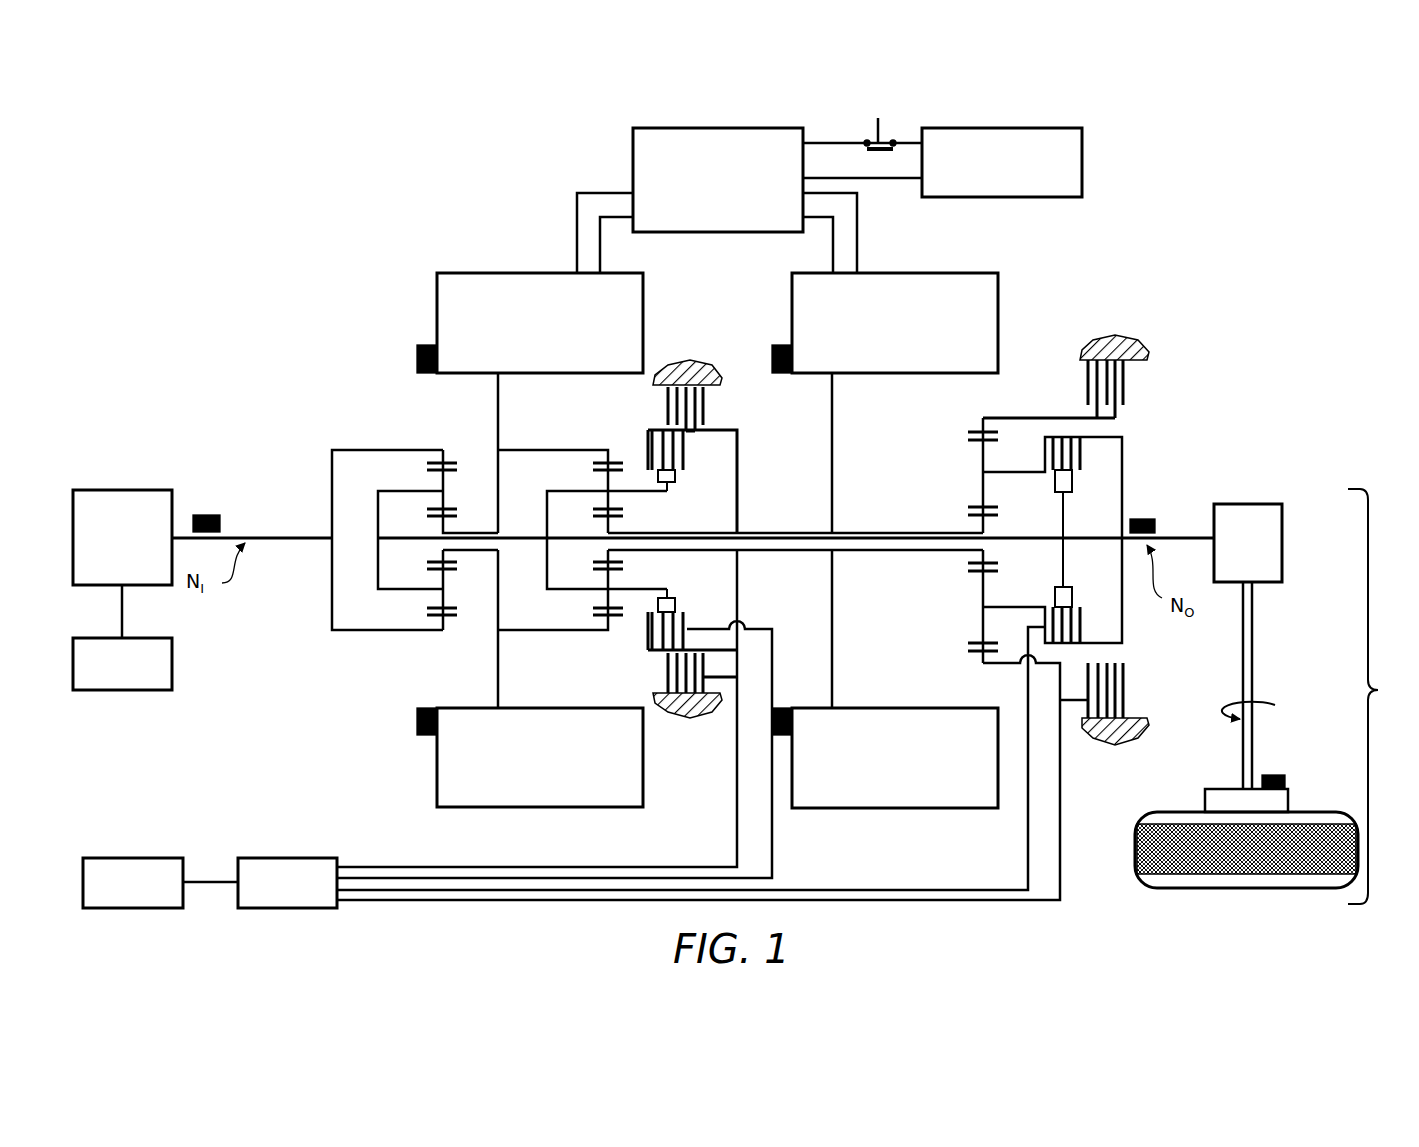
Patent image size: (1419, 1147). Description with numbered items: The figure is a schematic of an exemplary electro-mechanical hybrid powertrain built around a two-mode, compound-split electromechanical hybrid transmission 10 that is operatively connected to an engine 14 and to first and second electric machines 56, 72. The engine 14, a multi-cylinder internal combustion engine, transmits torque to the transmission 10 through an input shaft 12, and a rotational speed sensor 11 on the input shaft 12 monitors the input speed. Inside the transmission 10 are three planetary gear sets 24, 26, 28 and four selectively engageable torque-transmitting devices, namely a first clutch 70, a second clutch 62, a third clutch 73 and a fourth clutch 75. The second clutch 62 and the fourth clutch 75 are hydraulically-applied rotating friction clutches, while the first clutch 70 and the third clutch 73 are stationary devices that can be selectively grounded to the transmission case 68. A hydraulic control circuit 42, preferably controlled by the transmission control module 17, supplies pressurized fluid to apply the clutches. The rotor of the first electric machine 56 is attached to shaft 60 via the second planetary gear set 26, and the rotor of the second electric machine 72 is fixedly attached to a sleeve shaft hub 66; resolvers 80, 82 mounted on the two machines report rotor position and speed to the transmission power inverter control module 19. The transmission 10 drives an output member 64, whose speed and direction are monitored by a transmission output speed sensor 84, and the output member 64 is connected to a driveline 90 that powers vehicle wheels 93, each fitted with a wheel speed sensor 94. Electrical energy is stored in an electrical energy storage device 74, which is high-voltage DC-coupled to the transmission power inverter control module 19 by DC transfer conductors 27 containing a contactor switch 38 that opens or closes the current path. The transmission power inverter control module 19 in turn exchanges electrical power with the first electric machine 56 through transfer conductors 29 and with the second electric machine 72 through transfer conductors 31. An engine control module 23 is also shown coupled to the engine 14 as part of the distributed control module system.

The electromechanical hybrid transmission 10 is at (398, 235).
The rotational speed sensor 11 is at (205, 515).
The input shaft 12 is at (290, 536).
The engine 14 is at (128, 490).
The transmission control module 17 is at (122, 858).
The transmission power inverter control module 19 is at (633, 142).
The engine control module 23 is at (172, 681).
The first planetary gear set 24 is at (433, 445).
The second planetary gear set 26 is at (605, 445).
The DC transfer conductors 27 is at (818, 143).
The third planetary gear set 28 is at (975, 415).
The transfer conductors 29 is at (577, 230).
The transfer conductors 31 is at (857, 226).
The contactor switch 38 is at (880, 126).
The hydraulic control circuit 42 is at (255, 858).
The first electric machine 56 is at (437, 306).
The shaft 60 is at (1037, 537).
The clutch C2 62 is at (1078, 480).
The output member 64 is at (1178, 536).
The sleeve shaft hub 66 is at (870, 533).
The transmission case 68 is at (690, 372).
The clutch C1 70 is at (1075, 378).
The second electric machine 72 is at (998, 294).
The clutch C3 73 is at (707, 410).
The electrical energy storage device 74 is at (1084, 150).
The clutch C4 75 is at (688, 462).
The resolver 80 is at (417, 359).
The resolver 82 is at (782, 345).
The transmission output speed sensor 84 is at (1145, 519).
The driveline 90 is at (1380, 690).
The vehicle wheel 93 is at (1205, 800).
The wheel speed sensor 94 is at (1277, 775).